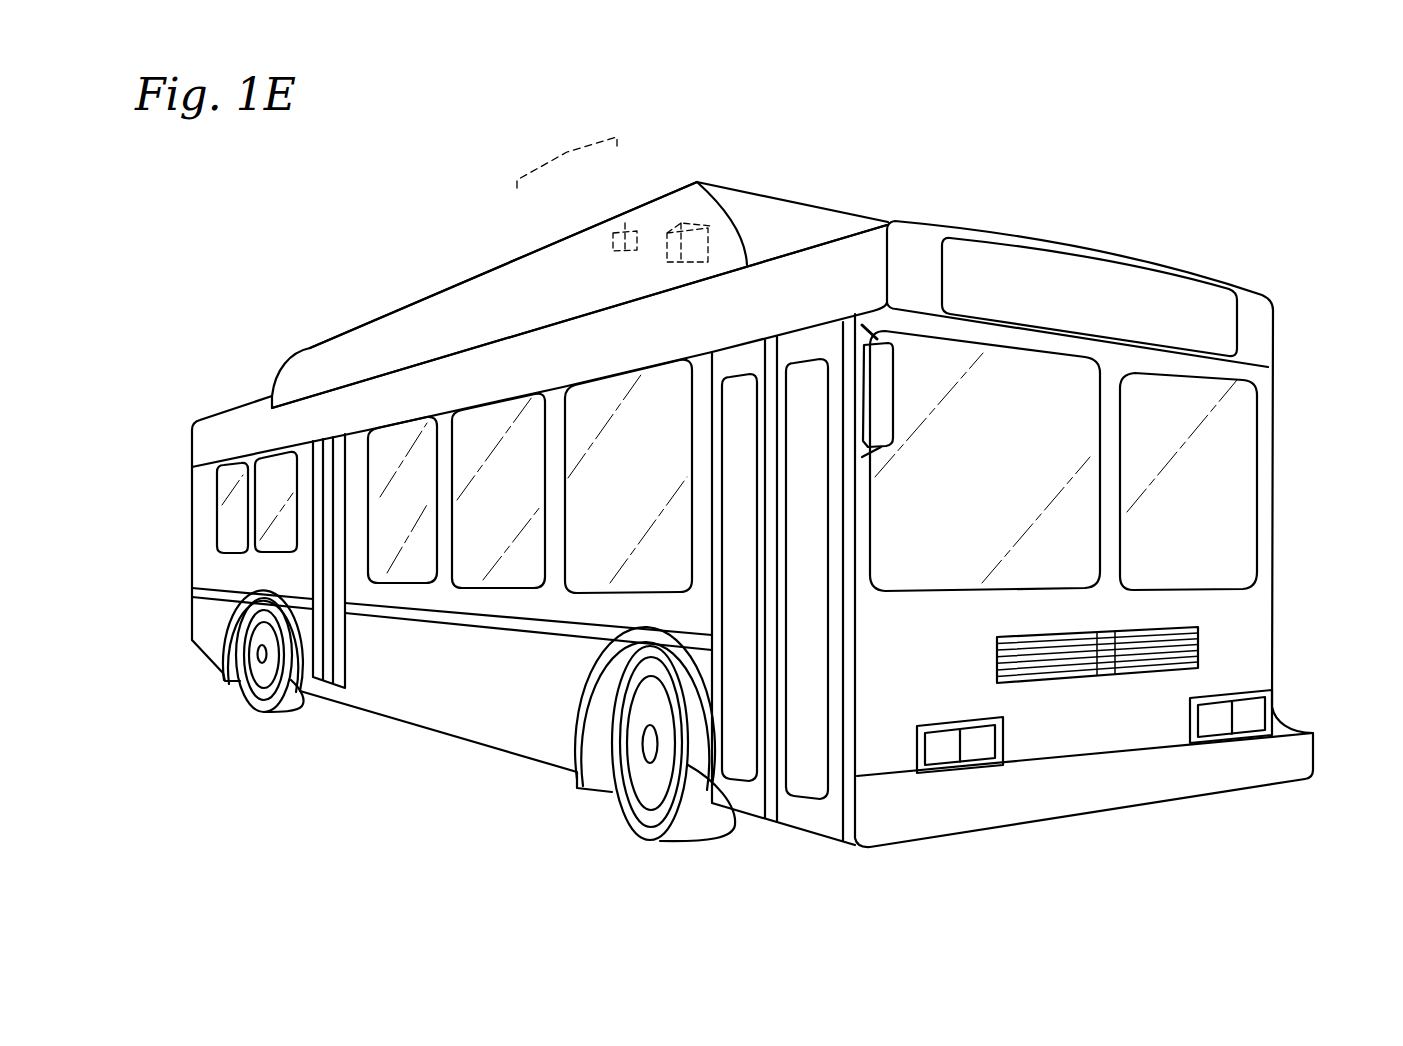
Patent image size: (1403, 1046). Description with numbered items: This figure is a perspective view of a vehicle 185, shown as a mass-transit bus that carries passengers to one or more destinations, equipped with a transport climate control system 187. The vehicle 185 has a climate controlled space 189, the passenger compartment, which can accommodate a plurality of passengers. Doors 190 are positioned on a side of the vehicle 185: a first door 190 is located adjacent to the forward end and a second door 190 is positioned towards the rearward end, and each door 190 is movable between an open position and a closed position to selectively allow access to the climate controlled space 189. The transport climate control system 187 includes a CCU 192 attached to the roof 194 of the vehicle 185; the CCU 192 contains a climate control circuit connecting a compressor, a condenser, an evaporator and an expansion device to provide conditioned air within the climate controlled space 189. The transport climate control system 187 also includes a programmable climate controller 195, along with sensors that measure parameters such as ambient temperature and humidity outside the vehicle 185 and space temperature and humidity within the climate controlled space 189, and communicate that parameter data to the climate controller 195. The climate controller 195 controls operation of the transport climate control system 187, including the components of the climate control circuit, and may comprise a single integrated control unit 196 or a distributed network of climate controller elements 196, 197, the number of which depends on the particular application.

The vehicle 185 is at (979, 158).
The transport climate control system 187 is at (462, 214).
The climate controlled space 189 is at (1209, 495).
The doors 190 is at (317, 463).
The CCU 192 is at (432, 293).
The roof 194 is at (1130, 253).
The climate controller 195 is at (567, 152).
The integrated control unit 196 is at (682, 222).
The climate controller element 197 is at (623, 228).